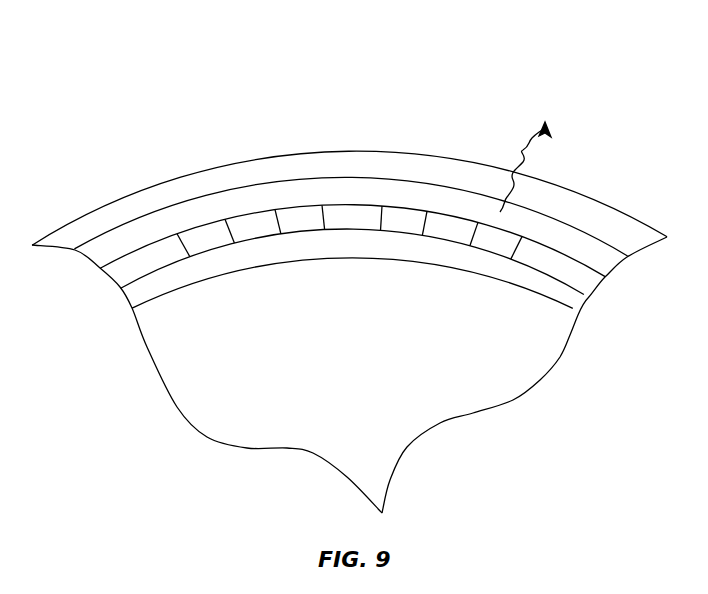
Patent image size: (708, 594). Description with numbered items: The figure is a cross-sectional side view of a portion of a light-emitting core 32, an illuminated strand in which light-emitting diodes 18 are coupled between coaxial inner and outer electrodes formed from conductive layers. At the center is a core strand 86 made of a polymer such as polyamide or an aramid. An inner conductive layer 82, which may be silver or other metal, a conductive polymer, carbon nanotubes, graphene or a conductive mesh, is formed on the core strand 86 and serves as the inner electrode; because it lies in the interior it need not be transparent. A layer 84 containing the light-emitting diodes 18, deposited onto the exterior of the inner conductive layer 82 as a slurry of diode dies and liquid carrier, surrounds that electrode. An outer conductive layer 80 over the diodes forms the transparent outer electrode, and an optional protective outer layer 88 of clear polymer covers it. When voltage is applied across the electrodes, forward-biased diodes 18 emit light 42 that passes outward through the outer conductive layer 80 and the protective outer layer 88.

The light-emitting core 32 is at (555, 78).
The light-emitting diodes 18 is at (482, 223).
The light 42 is at (528, 160).
The protective outer layer 88 is at (637, 235).
The outer conductive layer 80 is at (618, 256).
The layer 84 is at (597, 279).
The inner conductive layer 82 is at (582, 299).
The core strand 86 is at (541, 363).